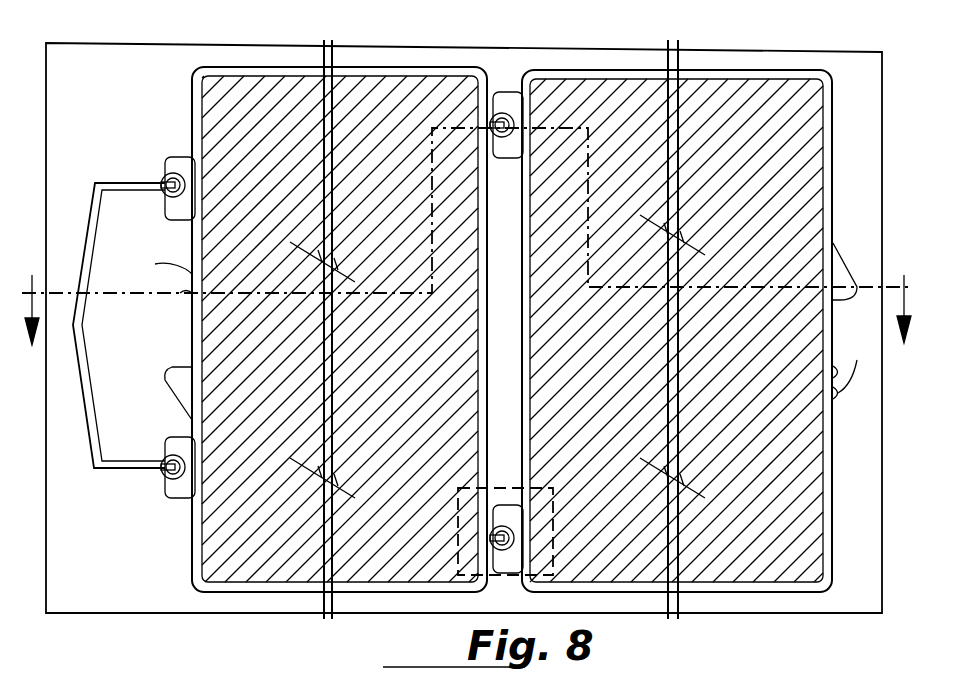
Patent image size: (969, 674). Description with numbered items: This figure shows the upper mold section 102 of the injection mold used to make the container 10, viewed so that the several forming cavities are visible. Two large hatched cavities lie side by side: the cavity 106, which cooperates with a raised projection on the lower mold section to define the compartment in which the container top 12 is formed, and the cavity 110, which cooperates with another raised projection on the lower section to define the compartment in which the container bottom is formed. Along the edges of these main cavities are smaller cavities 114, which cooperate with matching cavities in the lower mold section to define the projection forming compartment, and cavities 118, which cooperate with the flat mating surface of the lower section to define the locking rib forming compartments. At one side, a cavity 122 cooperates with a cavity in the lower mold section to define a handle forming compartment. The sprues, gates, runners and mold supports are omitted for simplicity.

The upper mold section 102 is at (147, 43).
The cavity 110 is at (246, 82).
The cavity 106 is at (806, 147).
The cavity 122 is at (122, 185).
The cavities 118 is at (168, 270).
The cavities 114 is at (172, 365).
The container 10 is at (468, 255).
The container top 12 is at (550, 488).